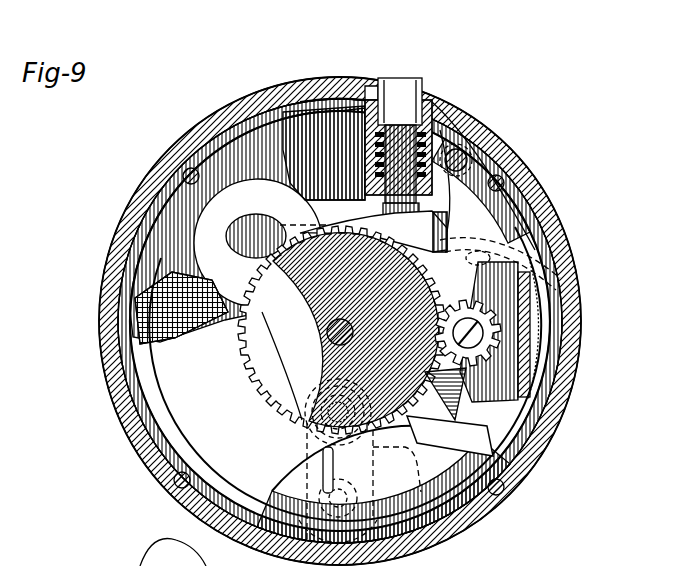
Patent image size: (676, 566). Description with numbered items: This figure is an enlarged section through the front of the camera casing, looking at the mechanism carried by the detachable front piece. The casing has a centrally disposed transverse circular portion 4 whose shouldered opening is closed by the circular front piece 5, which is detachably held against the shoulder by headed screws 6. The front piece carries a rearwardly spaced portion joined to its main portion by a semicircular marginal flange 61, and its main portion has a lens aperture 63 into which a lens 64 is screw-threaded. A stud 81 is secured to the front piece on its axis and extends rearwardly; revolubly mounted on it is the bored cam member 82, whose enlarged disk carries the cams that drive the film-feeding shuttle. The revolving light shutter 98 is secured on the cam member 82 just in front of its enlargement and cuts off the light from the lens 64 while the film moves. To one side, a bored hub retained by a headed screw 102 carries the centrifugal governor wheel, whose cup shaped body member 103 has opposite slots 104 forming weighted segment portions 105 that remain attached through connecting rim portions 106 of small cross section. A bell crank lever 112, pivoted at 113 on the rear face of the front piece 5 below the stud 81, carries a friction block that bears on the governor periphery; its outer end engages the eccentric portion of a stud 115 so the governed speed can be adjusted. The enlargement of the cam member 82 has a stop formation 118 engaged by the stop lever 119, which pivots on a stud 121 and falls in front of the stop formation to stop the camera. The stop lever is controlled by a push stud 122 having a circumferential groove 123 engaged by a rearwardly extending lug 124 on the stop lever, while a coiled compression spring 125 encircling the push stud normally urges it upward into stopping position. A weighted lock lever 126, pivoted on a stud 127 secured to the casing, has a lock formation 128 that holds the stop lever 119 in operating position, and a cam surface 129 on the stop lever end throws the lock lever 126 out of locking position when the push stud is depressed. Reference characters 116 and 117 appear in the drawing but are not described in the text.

The transverse circular portion 4 is at (222, 117).
The front piece 5 is at (345, 98).
The headed screws 6 is at (187, 168).
The semicircular marginal flange 61 is at (155, 218).
The lens aperture 63 is at (160, 273).
The lens 64 is at (128, 283).
The stud 81 is at (320, 352).
The cam member 82 is at (325, 313).
The revolving light shutter 98 is at (180, 408).
The headed screw 102 is at (480, 340).
The cup shaped body member 103 is at (540, 322).
The slots 104 is at (518, 360).
The segment portions 105 is at (535, 302).
The connecting rim portions 106 is at (555, 270).
The bell crank lever 112 is at (490, 462).
The pivot 113 is at (330, 416).
The stud 115 is at (330, 496).
The arm 116 is at (243, 357).
The stop 117 is at (490, 366).
The stop formation 118 is at (250, 326).
The stop lever 119 is at (228, 182).
The stud 121 is at (302, 115).
The push stud 122 is at (398, 80).
The circumferential groove 123 is at (455, 128).
The lug 124 is at (362, 98).
The coiled compression spring 125 is at (437, 112).
The lock lever 126 is at (485, 178).
The stud 127 is at (470, 140).
The lock formation 128 is at (447, 236).
The cam surface 129 is at (442, 222).